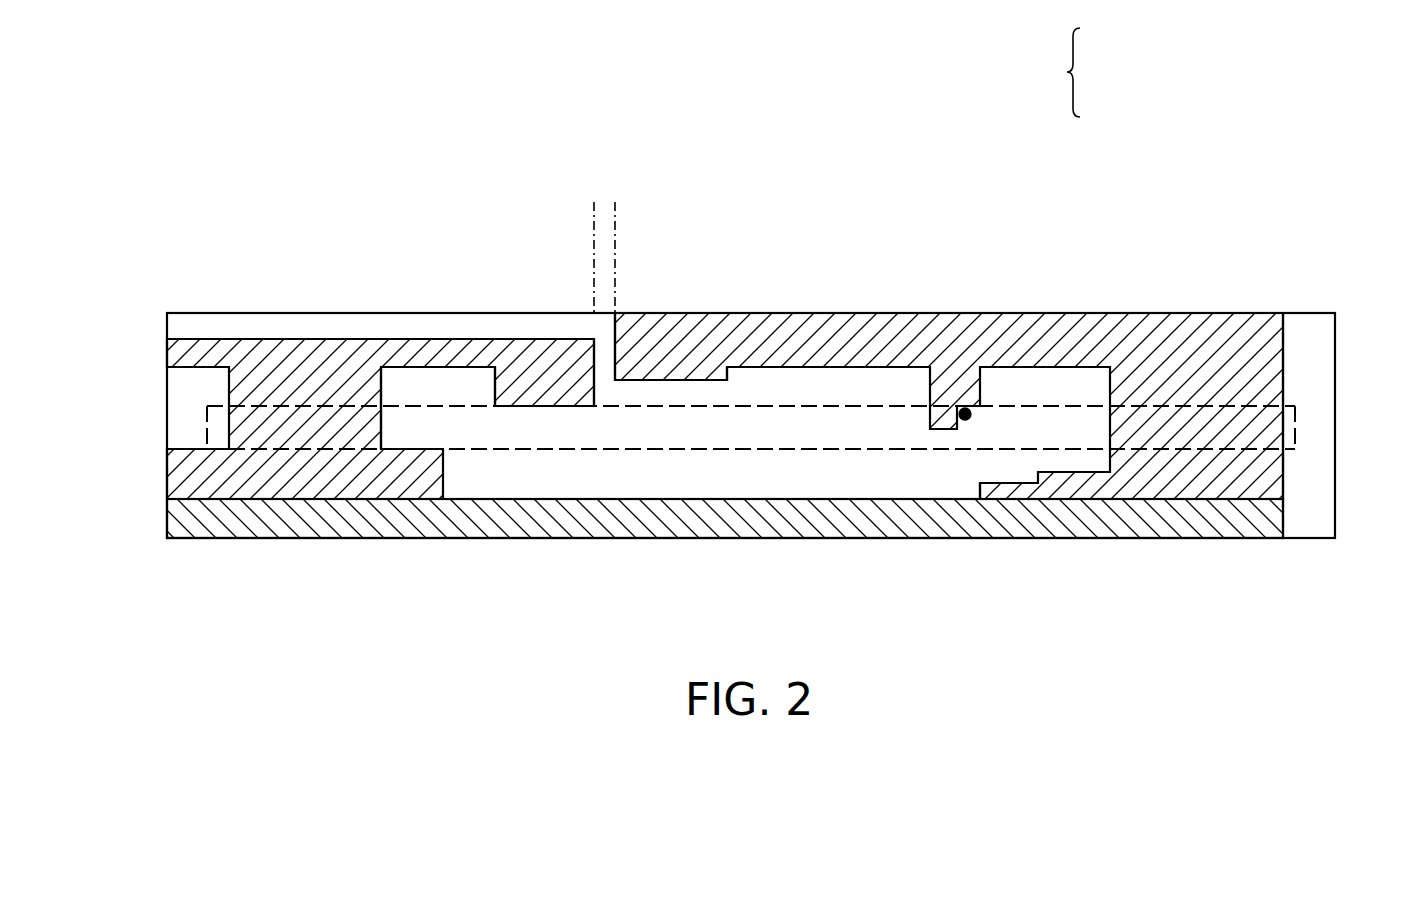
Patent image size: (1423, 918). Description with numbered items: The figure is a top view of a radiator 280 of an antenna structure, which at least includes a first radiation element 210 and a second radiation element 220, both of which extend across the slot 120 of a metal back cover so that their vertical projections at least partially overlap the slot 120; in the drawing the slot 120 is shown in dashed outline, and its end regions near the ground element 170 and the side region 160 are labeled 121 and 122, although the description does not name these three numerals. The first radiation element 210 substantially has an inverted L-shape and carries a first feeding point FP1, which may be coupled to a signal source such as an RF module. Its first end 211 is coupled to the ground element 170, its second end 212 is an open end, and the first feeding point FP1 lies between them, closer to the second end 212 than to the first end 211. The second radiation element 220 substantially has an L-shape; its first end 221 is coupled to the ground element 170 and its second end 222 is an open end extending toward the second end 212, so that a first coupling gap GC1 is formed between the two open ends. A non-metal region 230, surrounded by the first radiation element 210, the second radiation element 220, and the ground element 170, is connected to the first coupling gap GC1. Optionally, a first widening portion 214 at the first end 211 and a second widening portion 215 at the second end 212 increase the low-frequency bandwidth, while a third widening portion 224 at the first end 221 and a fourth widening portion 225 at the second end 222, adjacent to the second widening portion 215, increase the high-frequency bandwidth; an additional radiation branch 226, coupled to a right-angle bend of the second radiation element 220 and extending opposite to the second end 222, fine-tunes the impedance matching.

The slot 120 is at (802, 406).
The first end portion of circuit board 121 is at (207, 430).
The second end portion of circuit board 122 is at (1295, 427).
The side cover 160 is at (1308, 313).
The ground element 170 is at (640, 528).
The first radiation element 210 is at (1047, 339).
The first end 211 is at (1245, 493).
The second end 212 is at (616, 342).
The first widening portion 214 is at (1203, 493).
The second widening portion 215 is at (673, 347).
The second radiation element 220 is at (303, 397).
The first end 221 is at (333, 493).
The second end 222 is at (590, 366).
The third widening portion 224 is at (293, 490).
The fourth widening portion 225 is at (537, 378).
The additional radiation branch 226 is at (198, 350).
The non-metal region 230 is at (753, 473).
The radiator 280 is at (1075, 72).
The first feeding point FP1 is at (971, 418).
The first coupling gap GC1 is at (657, 210).